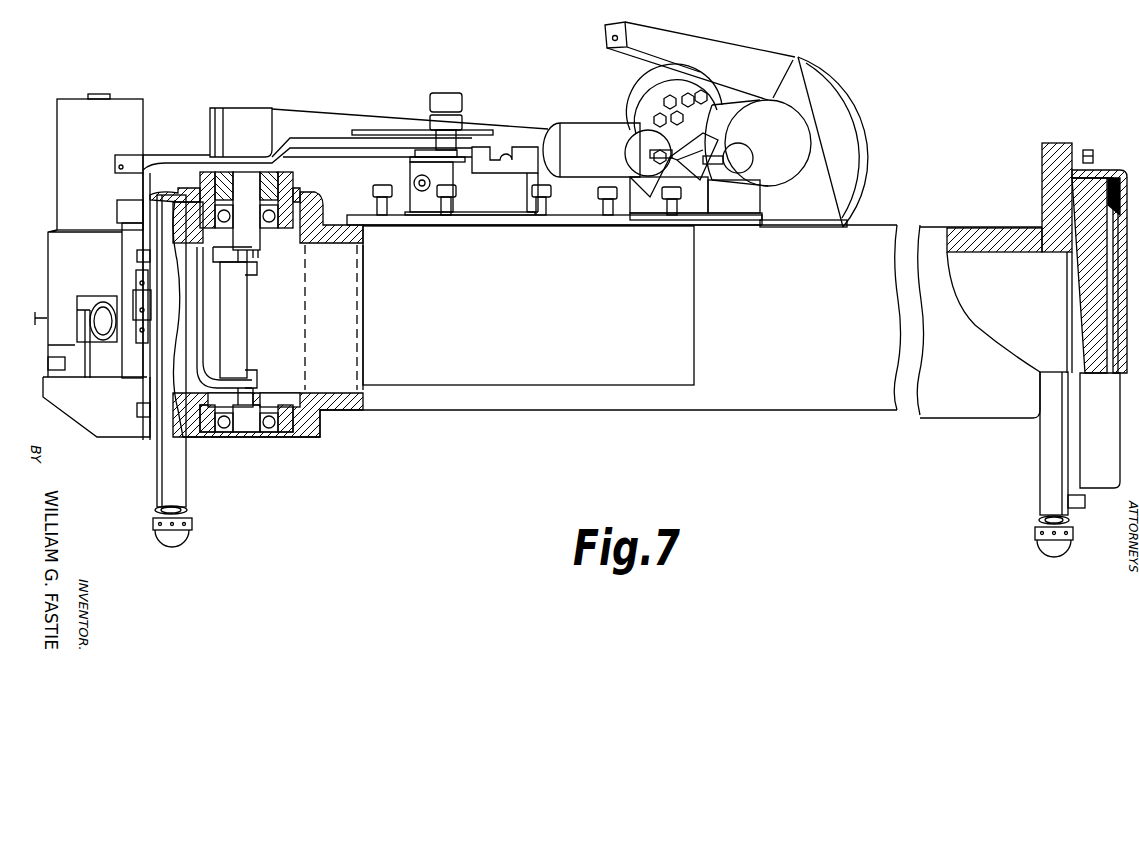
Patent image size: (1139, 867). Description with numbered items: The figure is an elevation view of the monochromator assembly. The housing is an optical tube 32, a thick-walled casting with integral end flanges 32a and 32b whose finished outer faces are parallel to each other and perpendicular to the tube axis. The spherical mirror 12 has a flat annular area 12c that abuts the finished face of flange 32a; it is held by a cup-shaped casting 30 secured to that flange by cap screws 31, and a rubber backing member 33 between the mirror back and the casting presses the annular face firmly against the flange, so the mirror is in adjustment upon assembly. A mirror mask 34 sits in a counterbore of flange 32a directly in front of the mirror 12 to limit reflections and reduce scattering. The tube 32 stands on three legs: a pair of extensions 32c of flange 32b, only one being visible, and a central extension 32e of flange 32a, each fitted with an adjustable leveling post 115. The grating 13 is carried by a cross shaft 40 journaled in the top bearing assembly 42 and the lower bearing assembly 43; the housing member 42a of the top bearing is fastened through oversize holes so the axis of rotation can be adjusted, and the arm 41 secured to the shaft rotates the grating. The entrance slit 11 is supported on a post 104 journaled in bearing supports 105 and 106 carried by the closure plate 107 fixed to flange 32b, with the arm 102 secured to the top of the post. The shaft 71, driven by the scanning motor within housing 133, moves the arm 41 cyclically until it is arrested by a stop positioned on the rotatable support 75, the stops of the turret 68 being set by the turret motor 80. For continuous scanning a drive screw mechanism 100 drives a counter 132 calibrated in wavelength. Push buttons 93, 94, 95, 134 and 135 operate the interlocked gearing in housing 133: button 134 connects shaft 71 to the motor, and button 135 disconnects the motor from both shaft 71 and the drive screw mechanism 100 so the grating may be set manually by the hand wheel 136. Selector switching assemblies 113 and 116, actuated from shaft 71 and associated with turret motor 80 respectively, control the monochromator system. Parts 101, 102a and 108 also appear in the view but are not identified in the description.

The entrance slit 11 is at (140, 327).
The mirror 12 is at (1087, 323).
The flat annular area 12c is at (1072, 182).
The grating 13 is at (232, 327).
The cup-shaped casting 30 is at (1116, 427).
The cap screws 31 is at (1093, 150).
The optical tube 32 is at (863, 240).
The end flange 32a is at (1048, 143).
The end flange 32b is at (166, 437).
The extensions 32c is at (178, 493).
The extension 32e is at (1050, 500).
The rubber backing member 33 is at (1110, 178).
The mirror mask 34 is at (1067, 283).
The cross shaft 40 is at (245, 405).
The arm 41 is at (300, 110).
The top bearing assembly 42 is at (295, 188).
The housing member 42a is at (192, 190).
The bearing assembly 43 is at (213, 430).
The turret 68 is at (742, 32).
The shaft 71 is at (443, 93).
The rotatable support 75 is at (650, 100).
The turret motor 80 is at (820, 77).
The push button 93 is at (543, 205).
The push button 94 is at (601, 203).
The push button 95 is at (670, 203).
The drive screw mechanism 100 is at (605, 167).
The bracket 101 is at (465, 145).
The arm 102 is at (330, 142).
The arm bracket 102a is at (118, 168).
The post 104 is at (132, 233).
The bearing support 105 is at (123, 208).
The bearing support 106 is at (133, 378).
The closure plate 107 is at (155, 425).
The screws 108 is at (140, 256).
The selector switching assembly 113 is at (443, 176).
The leveling posts 115 is at (180, 530).
The selector switching assembly 116 is at (777, 178).
The counter 132 is at (703, 175).
The housing 133 is at (563, 385).
The push button 134 is at (447, 205).
The push button 135 is at (387, 207).
The hand wheel 136 is at (748, 156).